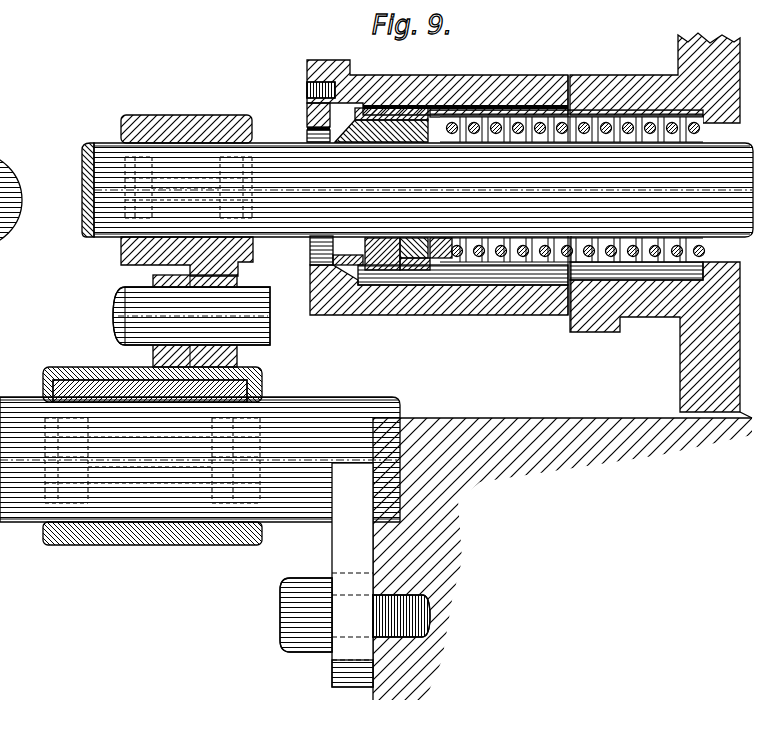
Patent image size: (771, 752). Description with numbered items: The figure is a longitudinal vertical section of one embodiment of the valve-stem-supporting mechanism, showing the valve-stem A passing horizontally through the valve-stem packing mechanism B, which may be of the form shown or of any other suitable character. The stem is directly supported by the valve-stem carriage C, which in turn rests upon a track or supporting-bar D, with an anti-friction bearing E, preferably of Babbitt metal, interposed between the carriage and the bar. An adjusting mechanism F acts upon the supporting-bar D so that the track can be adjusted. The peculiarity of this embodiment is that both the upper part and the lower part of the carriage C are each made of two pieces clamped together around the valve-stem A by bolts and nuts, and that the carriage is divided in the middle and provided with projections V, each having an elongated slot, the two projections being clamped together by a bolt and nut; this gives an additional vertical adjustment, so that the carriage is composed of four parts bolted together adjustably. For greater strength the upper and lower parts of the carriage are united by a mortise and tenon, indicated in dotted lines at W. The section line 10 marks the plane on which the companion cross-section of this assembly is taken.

The section line 10- 10 is at (17, 638).
The valve-stem A is at (417, 190).
The valve-stem packing mechanism B is at (392, 270).
The valve-stem carriage C is at (185, 317).
The track or supporting-bar D is at (200, 459).
The anti-friction bearing E is at (148, 528).
The adjusting mechanism F is at (355, 575).
The projections V is at (253, 277).
The mortise and tenon W is at (152, 309).